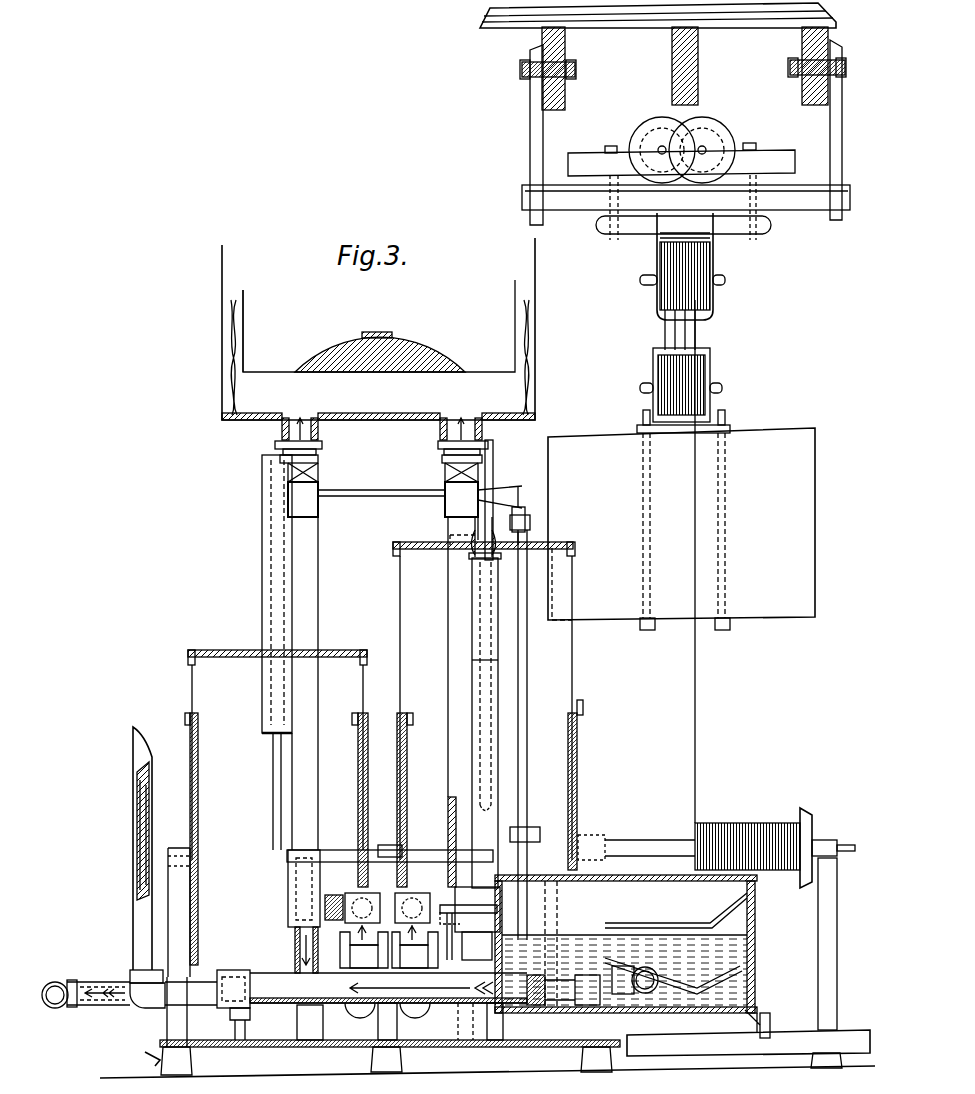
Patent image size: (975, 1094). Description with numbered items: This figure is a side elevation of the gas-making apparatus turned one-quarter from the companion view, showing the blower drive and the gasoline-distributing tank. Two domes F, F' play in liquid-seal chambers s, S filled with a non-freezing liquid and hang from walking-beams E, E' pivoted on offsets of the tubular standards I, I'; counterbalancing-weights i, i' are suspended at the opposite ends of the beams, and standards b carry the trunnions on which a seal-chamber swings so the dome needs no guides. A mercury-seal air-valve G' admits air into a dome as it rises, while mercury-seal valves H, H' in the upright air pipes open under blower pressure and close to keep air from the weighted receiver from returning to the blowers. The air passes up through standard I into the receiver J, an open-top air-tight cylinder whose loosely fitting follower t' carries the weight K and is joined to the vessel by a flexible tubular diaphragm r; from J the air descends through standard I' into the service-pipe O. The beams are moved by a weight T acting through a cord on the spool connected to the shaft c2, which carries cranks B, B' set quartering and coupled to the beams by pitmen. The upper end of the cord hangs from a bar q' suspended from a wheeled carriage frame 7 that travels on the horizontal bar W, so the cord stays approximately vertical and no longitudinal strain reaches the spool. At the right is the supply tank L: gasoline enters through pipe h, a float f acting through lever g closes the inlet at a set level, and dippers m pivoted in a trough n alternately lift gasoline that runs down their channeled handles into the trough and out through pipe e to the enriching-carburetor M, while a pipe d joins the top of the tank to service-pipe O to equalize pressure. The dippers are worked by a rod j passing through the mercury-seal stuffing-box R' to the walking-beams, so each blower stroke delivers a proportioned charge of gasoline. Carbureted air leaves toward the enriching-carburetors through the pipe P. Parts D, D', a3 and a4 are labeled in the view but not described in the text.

The pipe P is at (646, 136).
The carriage frame 7 is at (681, 159).
The bar W is at (686, 207).
The suspended bar q' is at (683, 281).
The weight T is at (681, 561).
The receiver J is at (378, 339).
The tubular diaphragm r is at (236, 298).
The follower t' is at (256, 331).
The weight K is at (349, 342).
The walking-beam E' is at (274, 645).
The standard I' is at (284, 594).
The counterbalancing-weight i' is at (262, 592).
The rod D' is at (258, 791).
The walking-beam E is at (481, 618).
The standard I is at (477, 720).
The piston D is at (475, 673).
The counterbalancing-weight i is at (473, 686).
The crank B is at (482, 838).
The rod j is at (528, 694).
The stuffing-box R' is at (536, 830).
The dome F is at (484, 714).
The dome F' is at (278, 768).
The liquid-seal chamber s is at (190, 779).
The liquid-seal chamber S is at (578, 768).
The pipe sections a3 is at (163, 866).
The shaft c2 is at (441, 850).
The crank B' is at (281, 911).
The valve boxes a4 is at (338, 893).
The mercury-seal valve H' is at (605, 990).
The mercury-seal valve H is at (616, 884).
The pipe d is at (477, 923).
The mercury-seal air-valve G' is at (234, 988).
The service-pipe O is at (64, 982).
The enriching-carburetor M is at (358, 1010).
The standard b is at (485, 1012).
The supply-tank L is at (626, 944).
The dipper m is at (714, 920).
The trough n is at (635, 967).
The pipe e is at (563, 970).
The pipe h is at (761, 1017).
The lever g is at (845, 853).
The float f is at (827, 944).